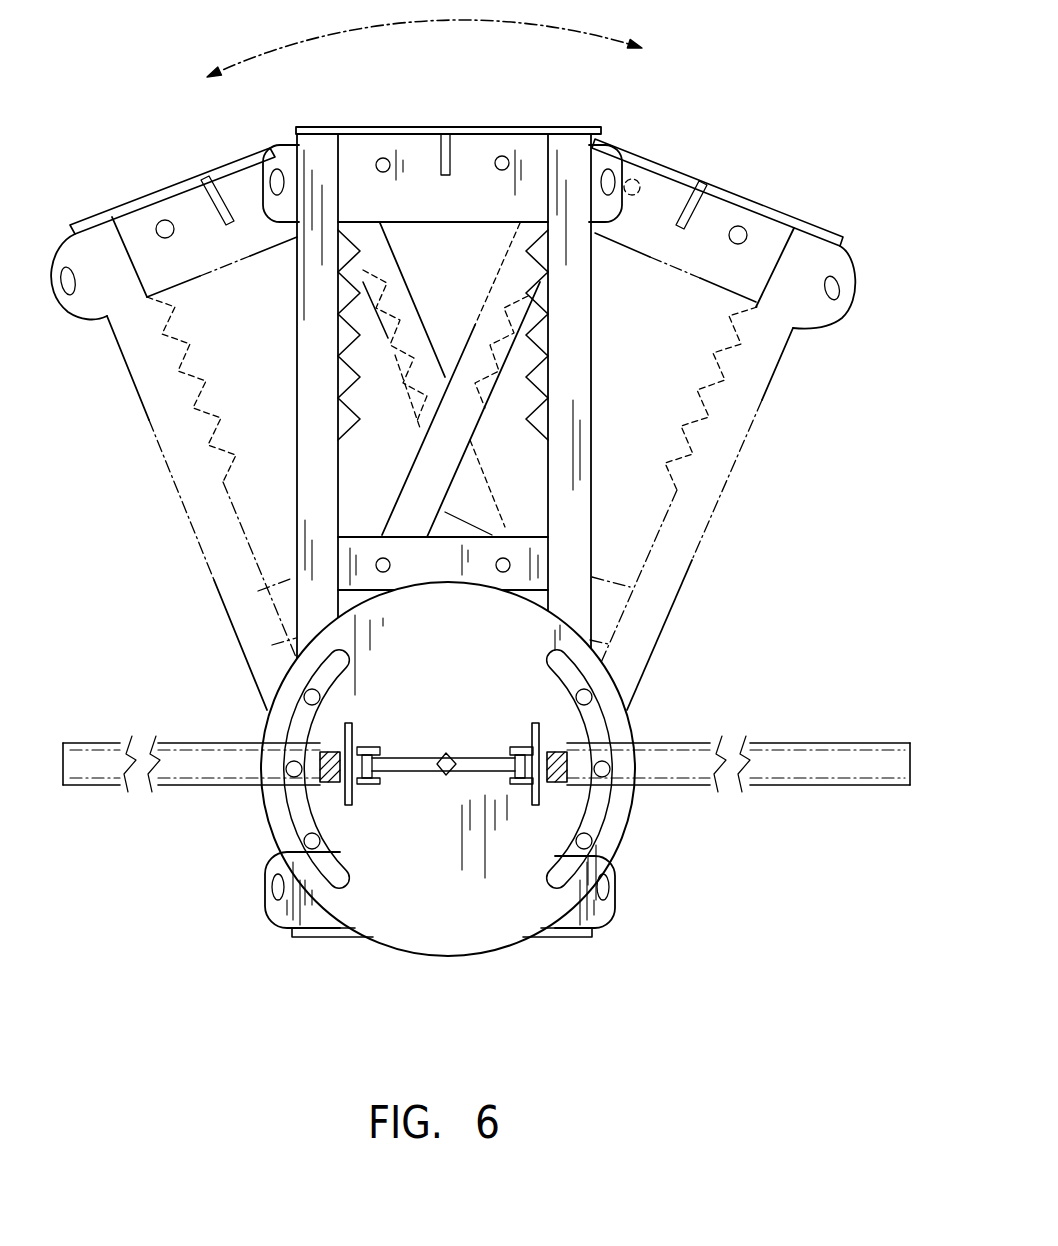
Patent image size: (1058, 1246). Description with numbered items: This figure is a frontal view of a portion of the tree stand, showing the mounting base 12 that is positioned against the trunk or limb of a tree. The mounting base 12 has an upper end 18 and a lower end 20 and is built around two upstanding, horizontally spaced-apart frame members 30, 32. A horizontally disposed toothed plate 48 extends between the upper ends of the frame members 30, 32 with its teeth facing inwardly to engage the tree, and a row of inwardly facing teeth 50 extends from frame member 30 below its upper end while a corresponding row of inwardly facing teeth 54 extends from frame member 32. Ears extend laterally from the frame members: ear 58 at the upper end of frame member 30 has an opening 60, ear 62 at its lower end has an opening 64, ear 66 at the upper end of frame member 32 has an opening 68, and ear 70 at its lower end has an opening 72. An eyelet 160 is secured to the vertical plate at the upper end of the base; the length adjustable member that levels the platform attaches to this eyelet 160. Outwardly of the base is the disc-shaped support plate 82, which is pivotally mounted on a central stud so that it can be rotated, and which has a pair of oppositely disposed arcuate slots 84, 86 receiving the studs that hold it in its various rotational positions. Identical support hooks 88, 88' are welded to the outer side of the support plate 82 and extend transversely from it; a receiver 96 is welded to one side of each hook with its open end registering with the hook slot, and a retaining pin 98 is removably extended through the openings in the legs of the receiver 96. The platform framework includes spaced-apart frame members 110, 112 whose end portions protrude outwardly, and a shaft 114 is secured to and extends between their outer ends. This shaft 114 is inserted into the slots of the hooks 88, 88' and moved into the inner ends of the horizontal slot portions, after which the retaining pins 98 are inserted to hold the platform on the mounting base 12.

The mounting base 12 is at (570, 112).
The upper end 18 is at (470, 110).
The lower end 20 is at (556, 945).
The frame member 30 is at (300, 497).
The frame member 32 is at (572, 497).
The toothed plate 48 is at (498, 127).
The teeth 50 is at (335, 337).
The teeth 54 is at (524, 368).
The ear 58 is at (235, 143).
The opening 60 is at (274, 180).
The ear 62 is at (248, 920).
The opening 64 is at (276, 887).
The ear 66 is at (664, 152).
The opening 68 is at (614, 178).
The ear 70 is at (649, 900).
The opening 72 is at (612, 889).
The support plate 82 is at (452, 898).
The arcuate slot 84 is at (296, 730).
The arcuate slot 86 is at (570, 680).
The support hook 88 is at (390, 729).
The support hook 88' is at (504, 729).
The receiver 96 is at (388, 752).
The retaining pin 98 is at (381, 760).
The frame member 110 is at (340, 766).
The frame member 112 is at (560, 768).
The shaft 114 is at (470, 773).
The eyelet 160 is at (438, 170).